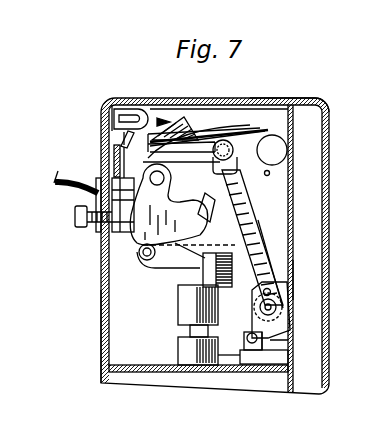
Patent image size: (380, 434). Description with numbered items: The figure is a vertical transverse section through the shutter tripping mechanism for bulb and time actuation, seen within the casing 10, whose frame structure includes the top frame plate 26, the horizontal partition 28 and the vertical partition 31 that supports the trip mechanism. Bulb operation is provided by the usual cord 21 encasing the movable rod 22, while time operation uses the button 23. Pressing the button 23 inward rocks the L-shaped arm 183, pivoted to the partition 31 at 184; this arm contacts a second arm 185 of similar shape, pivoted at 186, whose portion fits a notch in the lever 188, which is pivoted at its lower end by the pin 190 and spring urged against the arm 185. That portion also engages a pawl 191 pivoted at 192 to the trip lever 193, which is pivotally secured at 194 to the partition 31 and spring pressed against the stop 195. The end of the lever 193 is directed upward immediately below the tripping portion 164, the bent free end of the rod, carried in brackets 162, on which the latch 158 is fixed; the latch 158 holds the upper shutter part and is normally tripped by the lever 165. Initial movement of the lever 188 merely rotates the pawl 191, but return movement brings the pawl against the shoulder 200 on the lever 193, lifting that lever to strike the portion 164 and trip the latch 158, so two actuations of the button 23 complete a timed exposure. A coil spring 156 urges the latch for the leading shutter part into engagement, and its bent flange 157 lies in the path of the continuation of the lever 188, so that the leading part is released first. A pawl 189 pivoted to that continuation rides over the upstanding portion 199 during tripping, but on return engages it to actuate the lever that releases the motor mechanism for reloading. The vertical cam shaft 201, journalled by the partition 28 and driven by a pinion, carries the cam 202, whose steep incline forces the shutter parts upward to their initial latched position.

The casing 10 is at (101, 319).
The cord 21 is at (70, 200).
The movable rod 22 is at (68, 173).
The button 23 is at (75, 220).
The top frame plate 26 is at (101, 292).
The horizontal partition 28 is at (125, 373).
The vertical partition 31 is at (267, 102).
The coil spring 156 is at (288, 277).
The bent flange 157 is at (283, 353).
The latch 158 is at (172, 115).
The brackets 162 is at (135, 105).
The tripping portion 164 is at (118, 110).
The lever 165 is at (112, 125).
The L-shaped arm 183 is at (153, 262).
The pivot 184 is at (115, 160).
The second arm 185 is at (238, 178).
The pivot 186 is at (235, 223).
The lever 188 is at (233, 246).
The pawl 189 is at (215, 360).
The pivot pin 190 is at (286, 303).
The pawl 191 is at (268, 163).
The pivot 192 is at (246, 128).
The trip lever 193 is at (196, 128).
The pivot 194 is at (291, 134).
The stop 195 is at (120, 143).
The upstanding portion 199 is at (246, 335).
The shoulder 200 is at (172, 211).
The vertical cam shaft 201 is at (178, 328).
The cam 202 is at (203, 283).